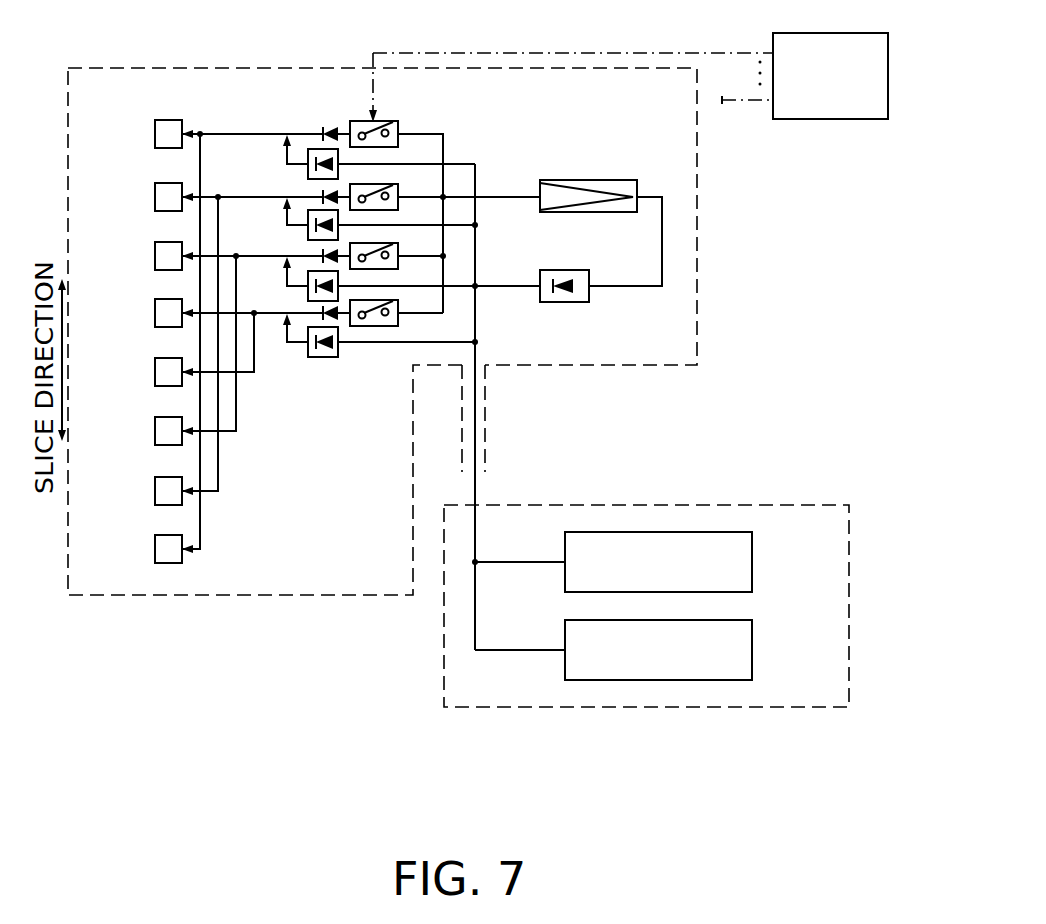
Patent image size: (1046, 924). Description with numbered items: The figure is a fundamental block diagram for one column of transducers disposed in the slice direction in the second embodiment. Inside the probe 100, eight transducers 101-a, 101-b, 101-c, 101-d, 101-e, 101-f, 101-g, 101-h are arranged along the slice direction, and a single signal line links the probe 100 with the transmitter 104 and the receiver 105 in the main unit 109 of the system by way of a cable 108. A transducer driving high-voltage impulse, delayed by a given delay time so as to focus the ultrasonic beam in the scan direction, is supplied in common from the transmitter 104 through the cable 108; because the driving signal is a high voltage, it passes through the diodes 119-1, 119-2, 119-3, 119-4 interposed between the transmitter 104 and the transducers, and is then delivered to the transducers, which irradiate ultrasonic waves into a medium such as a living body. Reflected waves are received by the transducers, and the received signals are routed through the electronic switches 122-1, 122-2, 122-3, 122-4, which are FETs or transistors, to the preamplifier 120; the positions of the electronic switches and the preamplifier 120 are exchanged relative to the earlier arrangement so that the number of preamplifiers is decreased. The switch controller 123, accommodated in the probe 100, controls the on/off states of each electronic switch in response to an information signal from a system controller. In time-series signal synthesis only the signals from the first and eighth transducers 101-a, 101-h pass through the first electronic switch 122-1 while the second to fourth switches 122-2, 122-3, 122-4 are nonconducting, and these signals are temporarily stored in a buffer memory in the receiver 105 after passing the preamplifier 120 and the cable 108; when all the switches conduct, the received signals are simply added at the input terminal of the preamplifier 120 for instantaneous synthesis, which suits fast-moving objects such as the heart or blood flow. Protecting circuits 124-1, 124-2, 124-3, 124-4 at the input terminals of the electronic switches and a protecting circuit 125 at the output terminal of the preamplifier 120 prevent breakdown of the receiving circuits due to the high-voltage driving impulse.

The probe 100 is at (248, 68).
The transducer 101-a is at (155, 134).
The transducer 101-b is at (155, 197).
The transducer 101-c is at (155, 256).
The transducer 101-d is at (155, 313).
The transducer 101-e is at (155, 372).
The transducer 101-f is at (155, 431).
The transducer 101-g is at (155, 491).
The transducer 101-h is at (155, 549).
The transmitter 104 is at (752, 562).
The receiver 105 is at (752, 655).
The cable 108 is at (486, 440).
The main unit 109 is at (735, 707).
The diode 119-1 is at (308, 172).
The diode 119-2 is at (308, 230).
The diode 119-3 is at (308, 290).
The diode 119-4 is at (320, 357).
The preamplifier 120 is at (606, 180).
The first electronic switch 122-1 is at (398, 122).
The second electronic switch 122-2 is at (398, 182).
The third electronic switch 122-3 is at (398, 244).
The fourth electronic switch 122-4 is at (398, 325).
The switch controller 123 is at (870, 119).
The protecting circuit 124-1 is at (330, 125).
The protecting circuit 124-2 is at (323, 193).
The protecting circuit 124-3 is at (323, 253).
The protecting circuit 124-4 is at (323, 310).
The protecting circuit 125 is at (590, 270).